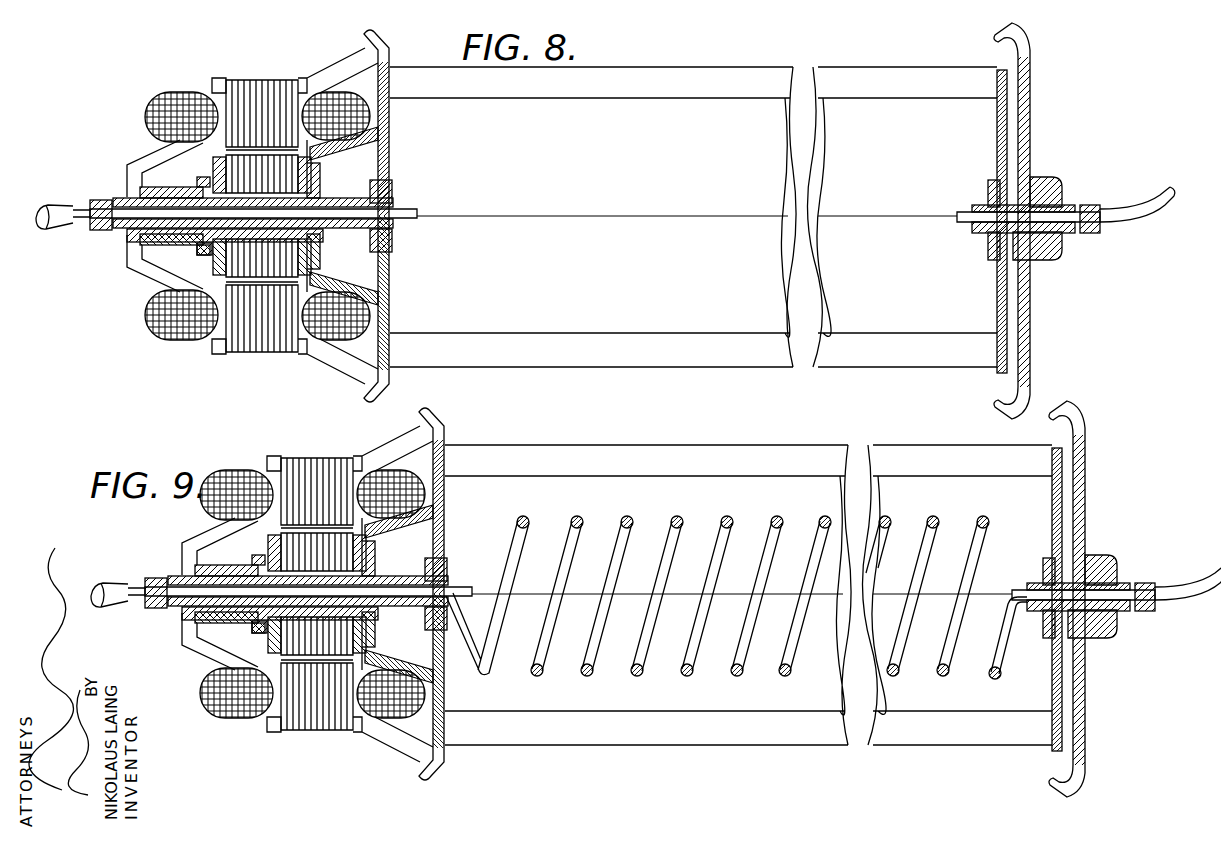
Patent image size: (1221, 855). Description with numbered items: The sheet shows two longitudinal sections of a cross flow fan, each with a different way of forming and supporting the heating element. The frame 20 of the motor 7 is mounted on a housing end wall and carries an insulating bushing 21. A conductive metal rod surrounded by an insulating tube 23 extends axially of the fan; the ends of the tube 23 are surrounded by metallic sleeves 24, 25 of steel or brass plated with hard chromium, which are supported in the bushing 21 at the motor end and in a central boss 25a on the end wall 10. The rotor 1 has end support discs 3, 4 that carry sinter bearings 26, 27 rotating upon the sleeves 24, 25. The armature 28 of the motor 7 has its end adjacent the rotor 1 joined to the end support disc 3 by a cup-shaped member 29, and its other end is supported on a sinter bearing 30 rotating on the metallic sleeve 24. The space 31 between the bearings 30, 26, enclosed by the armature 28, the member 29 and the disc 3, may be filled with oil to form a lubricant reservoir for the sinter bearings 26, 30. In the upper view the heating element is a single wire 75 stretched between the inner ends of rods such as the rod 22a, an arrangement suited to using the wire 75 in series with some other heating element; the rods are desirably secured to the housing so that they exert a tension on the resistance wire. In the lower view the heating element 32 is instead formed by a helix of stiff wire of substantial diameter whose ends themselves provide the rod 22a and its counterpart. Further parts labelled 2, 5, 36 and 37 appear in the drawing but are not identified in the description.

In FIG. 8, the rotor 1 is at (744, 75).
In FIG. 9, the rotor 1 is at (644, 743).
In FIG. 8, the housing wall 2 is at (683, 76).
In FIG. 8, the rotor end support disc 3 is at (385, 165).
In FIG. 9, the rotor end support disc 3 is at (440, 528).
In FIG. 8, the rotor end support disc 4 is at (1000, 124).
In FIG. 9, the rotor end support disc 4 is at (1053, 482).
In FIG. 8, the interior chamber 5 is at (647, 176).
In FIG. 8, the motor 7 is at (262, 73).
In FIG. 9, the motor 7 is at (341, 457).
In FIG. 8, the end wall 10 is at (1030, 52).
In FIG. 9, the end wall 10 is at (1073, 478).
In FIG. 8, the frame 20 is at (323, 363).
In FIG. 9, the frame 20 is at (195, 645).
In FIG. 8, the insulating bushing 21 is at (190, 225).
In FIG. 9, the insulating bushing 21 is at (237, 630).
In FIG. 8, the rod 22a is at (380, 152).
In FIG. 8, the insulating tube 23 is at (135, 232).
In FIG. 9, the insulating tube 23 is at (177, 603).
In FIG. 8, the metallic sleeve 24 is at (170, 222).
In FIG. 9, the metallic sleeve 24 is at (227, 612).
In FIG. 8, the metallic sleeve 25 is at (1043, 185).
In FIG. 9, the metallic sleeve 25 is at (1087, 555).
In FIG. 8, the central boss 25a is at (1062, 252).
In FIG. 9, the central boss 25a is at (1100, 625).
In FIG. 8, the sinter bearing 26 is at (393, 250).
In FIG. 9, the sinter bearing 26 is at (452, 625).
In FIG. 8, the sinter bearing 27 is at (990, 192).
In FIG. 9, the sinter bearing 27 is at (1043, 573).
In FIG. 8, the armature 28 is at (277, 258).
In FIG. 9, the armature 28 is at (323, 650).
In FIG. 9, the cup-shaped member 29 is at (373, 658).
In FIG. 8, the sinter bearing 30 is at (205, 292).
In FIG. 9, the sinter bearing 30 is at (255, 633).
In FIG. 9, the space 31 is at (405, 645).
In FIG. 9, the heating element 32 is at (638, 672).
In FIG. 8, the electrical cable 36 is at (48, 232).
In FIG. 9, the electrical cable 36 is at (118, 598).
In FIG. 8, the electrical cable 37 is at (1130, 207).
In FIG. 9, the electrical cable 37 is at (1172, 568).
In FIG. 8, the wire 75 is at (640, 218).